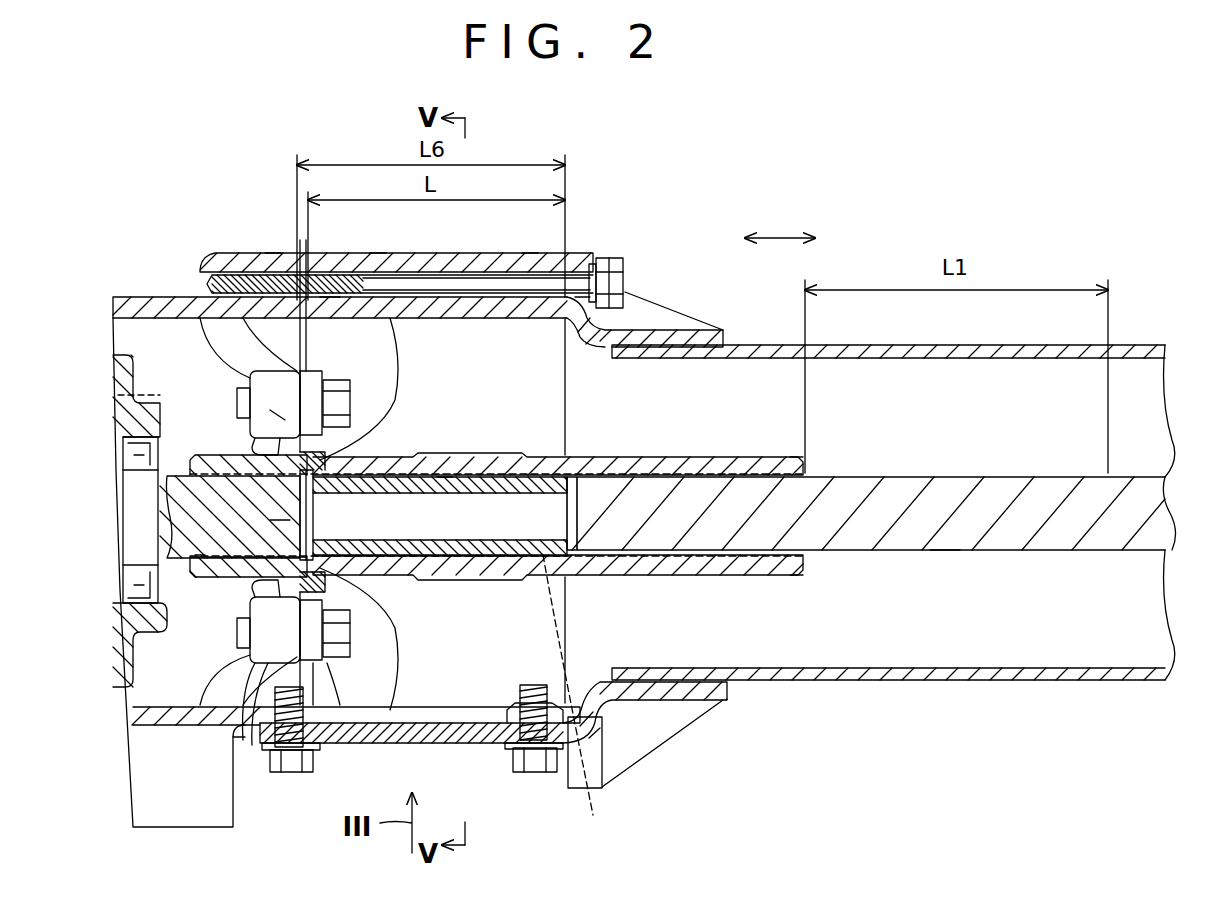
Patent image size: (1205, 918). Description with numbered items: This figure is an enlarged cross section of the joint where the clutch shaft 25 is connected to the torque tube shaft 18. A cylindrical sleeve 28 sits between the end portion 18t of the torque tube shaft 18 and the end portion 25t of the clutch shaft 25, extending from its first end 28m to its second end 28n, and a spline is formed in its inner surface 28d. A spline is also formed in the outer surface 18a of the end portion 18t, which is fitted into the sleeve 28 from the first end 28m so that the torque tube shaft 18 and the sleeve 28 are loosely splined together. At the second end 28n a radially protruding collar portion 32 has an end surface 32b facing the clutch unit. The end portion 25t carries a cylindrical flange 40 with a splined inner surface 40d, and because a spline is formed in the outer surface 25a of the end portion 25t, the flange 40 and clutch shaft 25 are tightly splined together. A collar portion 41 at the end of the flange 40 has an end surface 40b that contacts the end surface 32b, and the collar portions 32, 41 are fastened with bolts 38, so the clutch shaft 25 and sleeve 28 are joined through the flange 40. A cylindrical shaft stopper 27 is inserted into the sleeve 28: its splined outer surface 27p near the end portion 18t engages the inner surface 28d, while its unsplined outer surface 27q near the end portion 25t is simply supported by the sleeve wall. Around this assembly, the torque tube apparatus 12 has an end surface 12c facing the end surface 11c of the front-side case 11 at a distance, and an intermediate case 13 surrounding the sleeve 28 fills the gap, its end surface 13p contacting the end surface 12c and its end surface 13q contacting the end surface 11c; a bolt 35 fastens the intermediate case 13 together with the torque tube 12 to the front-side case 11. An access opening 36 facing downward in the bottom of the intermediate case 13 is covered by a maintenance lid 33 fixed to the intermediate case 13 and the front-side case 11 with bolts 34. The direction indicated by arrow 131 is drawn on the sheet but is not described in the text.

The front-side case 11 is at (197, 255).
The end surface 11c is at (330, 297).
The torque tube apparatus 12 is at (903, 347).
The end surface 12c is at (530, 255).
The intermediate case 13 is at (475, 255).
The end surface 13p is at (583, 297).
The end surface 13q is at (273, 255).
The torque tube shaft 18 is at (997, 500).
The outer surface 18a is at (943, 553).
The end portion 18t is at (613, 523).
The clutch shaft 25 is at (140, 493).
The outer surface 25a is at (218, 458).
The end portion 25t is at (283, 520).
The shaft stopper 27 is at (437, 552).
The outer surface 27p is at (582, 697).
The outer surface 27q is at (445, 477).
The sleeve 28 is at (385, 578).
The inner surface 28d is at (787, 455).
The first end 28m is at (787, 563).
The second end 28n is at (385, 455).
The collar portion 32 is at (313, 650).
The end surface 32b is at (248, 660).
The maintenance lid 33 is at (460, 743).
The bolts 34 is at (537, 765).
The bolt 35 is at (625, 280).
The access opening 36 is at (495, 747).
The bolts 38 is at (343, 645).
The flange 40 is at (183, 258).
The end surface 40b is at (277, 417).
The inner surface 40d is at (200, 550).
The collar portion 41 is at (252, 745).
The axial direction 131 is at (783, 232).